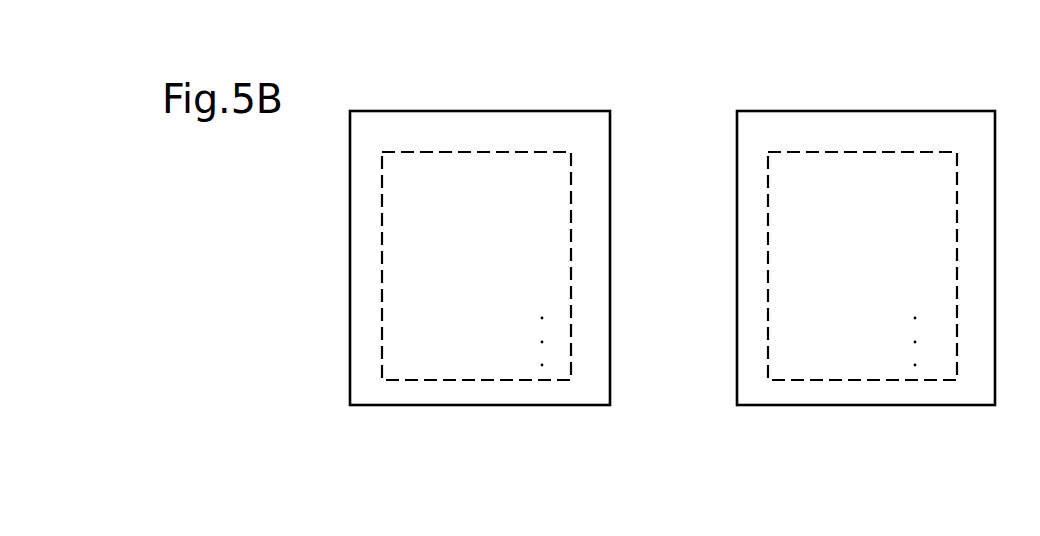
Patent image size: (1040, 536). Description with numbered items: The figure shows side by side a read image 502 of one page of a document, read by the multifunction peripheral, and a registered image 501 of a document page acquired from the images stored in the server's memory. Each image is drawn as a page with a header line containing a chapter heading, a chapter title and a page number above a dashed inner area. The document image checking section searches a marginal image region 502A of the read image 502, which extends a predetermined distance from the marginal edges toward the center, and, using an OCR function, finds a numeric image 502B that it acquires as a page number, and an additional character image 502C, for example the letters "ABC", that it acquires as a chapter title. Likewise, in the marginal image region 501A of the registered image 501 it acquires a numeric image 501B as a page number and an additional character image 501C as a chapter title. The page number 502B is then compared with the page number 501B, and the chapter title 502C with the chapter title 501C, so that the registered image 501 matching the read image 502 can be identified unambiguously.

The registered image 501 is at (737, 299).
The marginal image region 501A is at (747, 217).
The numeric image 501B is at (957, 120).
The additional character image 501C is at (837, 100).
The read image 502 is at (367, 299).
The marginal image region 502A is at (375, 217).
The numeric image 502B is at (583, 120).
The additional character image 502C is at (455, 99).